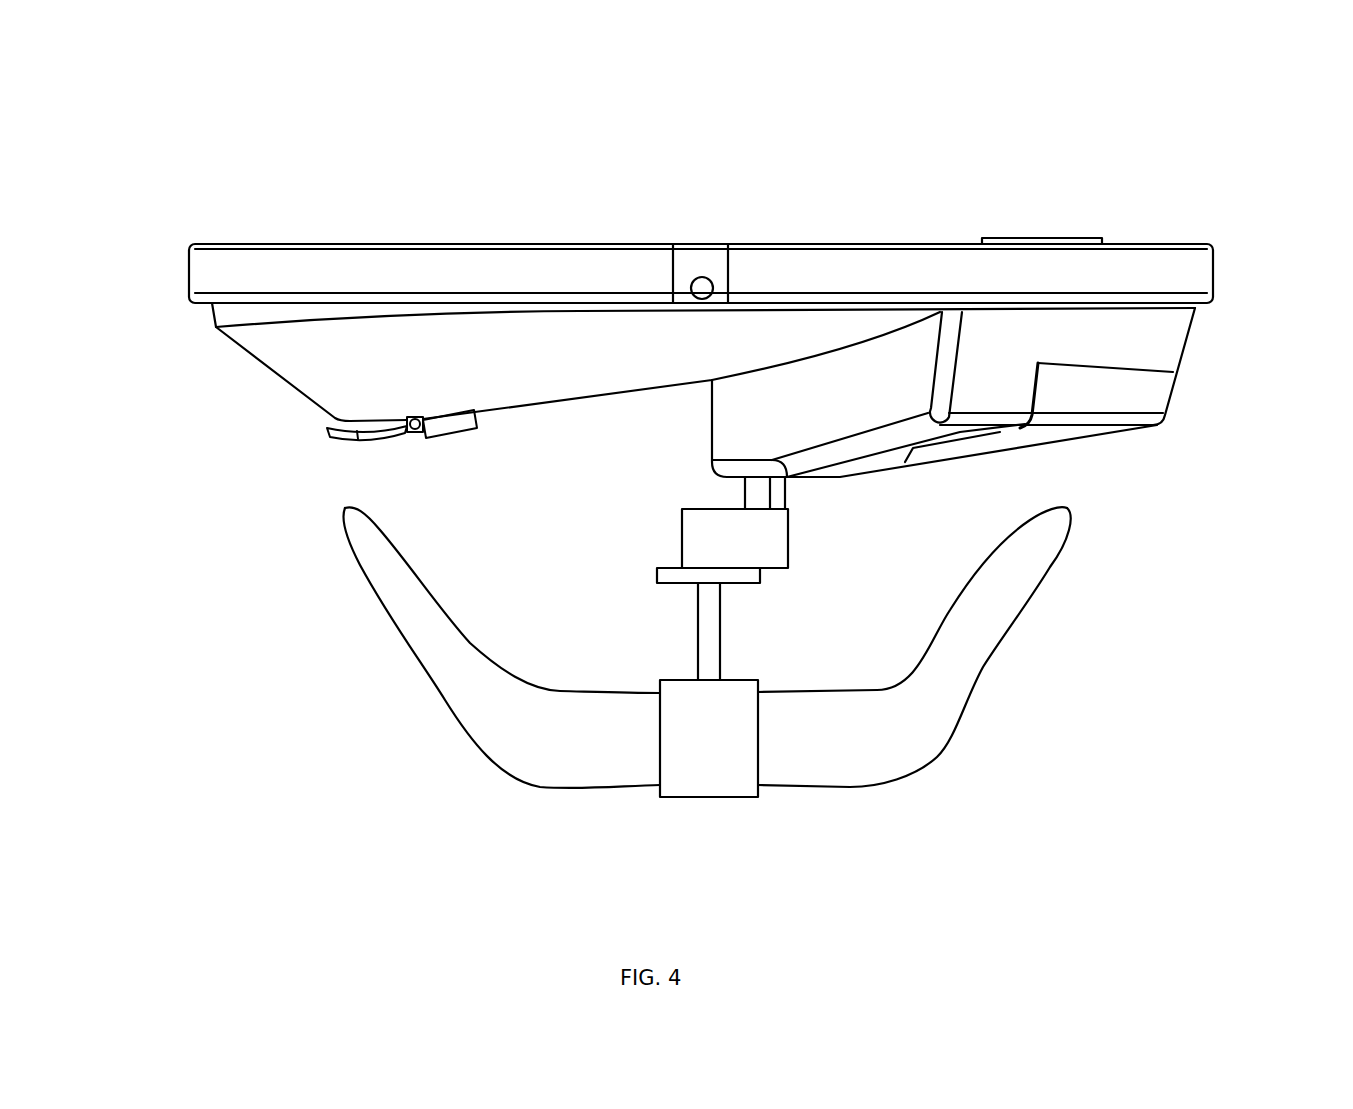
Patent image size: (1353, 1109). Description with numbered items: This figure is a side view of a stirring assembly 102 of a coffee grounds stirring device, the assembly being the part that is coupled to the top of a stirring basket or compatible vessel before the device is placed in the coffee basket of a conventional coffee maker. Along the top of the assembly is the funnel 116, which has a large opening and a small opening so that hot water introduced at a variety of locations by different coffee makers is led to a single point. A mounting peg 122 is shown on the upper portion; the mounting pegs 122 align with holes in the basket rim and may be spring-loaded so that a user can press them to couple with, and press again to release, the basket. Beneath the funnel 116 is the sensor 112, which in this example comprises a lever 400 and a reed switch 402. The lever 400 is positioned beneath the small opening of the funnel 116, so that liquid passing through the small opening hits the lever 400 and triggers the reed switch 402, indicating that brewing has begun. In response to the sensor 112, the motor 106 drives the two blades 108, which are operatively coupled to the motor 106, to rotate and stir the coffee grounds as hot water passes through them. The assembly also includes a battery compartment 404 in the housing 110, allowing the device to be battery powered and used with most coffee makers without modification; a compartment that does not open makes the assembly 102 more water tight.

The stirring assembly 102 is at (1104, 183).
The motor 106 is at (682, 533).
The blades 108 is at (533, 778).
The housing 110 is at (1203, 364).
The sensor 112 is at (401, 452).
The funnel 116 is at (283, 357).
The mounting pegs 122 is at (703, 285).
The lever 400 is at (342, 438).
The reed switch 402 is at (477, 432).
The battery compartment 404 is at (1050, 440).